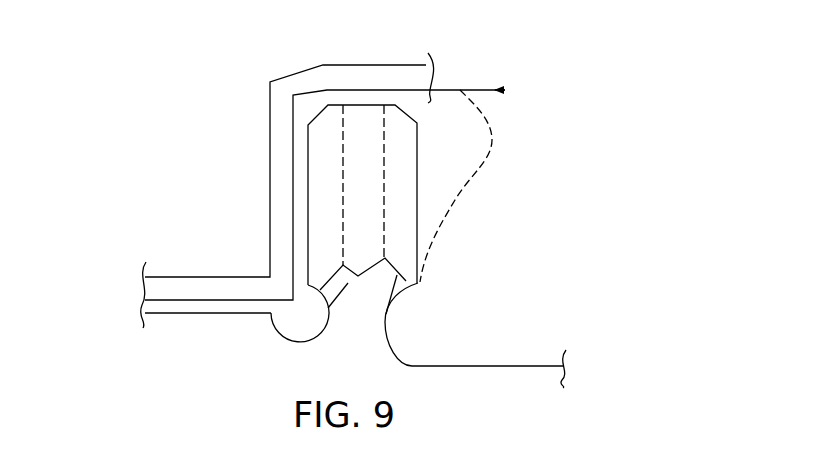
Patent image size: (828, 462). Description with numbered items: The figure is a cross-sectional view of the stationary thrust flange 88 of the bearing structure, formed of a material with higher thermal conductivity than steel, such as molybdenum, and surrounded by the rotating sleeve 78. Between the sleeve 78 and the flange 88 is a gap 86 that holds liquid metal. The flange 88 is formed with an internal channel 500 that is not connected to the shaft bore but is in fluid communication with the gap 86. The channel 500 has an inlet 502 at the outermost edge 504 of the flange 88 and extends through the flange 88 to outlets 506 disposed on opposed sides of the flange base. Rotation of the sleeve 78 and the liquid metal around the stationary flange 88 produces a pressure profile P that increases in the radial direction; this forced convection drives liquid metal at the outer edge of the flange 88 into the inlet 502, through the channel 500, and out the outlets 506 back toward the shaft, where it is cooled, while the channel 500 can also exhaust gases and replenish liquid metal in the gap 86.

The sleeve 78 is at (266, 83).
The gap 86 is at (300, 112).
The thrust flange 88 is at (302, 195).
The internal channel 500 is at (396, 174).
The inlet 502 is at (368, 126).
The outermost edge 504 is at (328, 104).
The outlet 506 is at (350, 310).
The pressure profile P is at (480, 86).